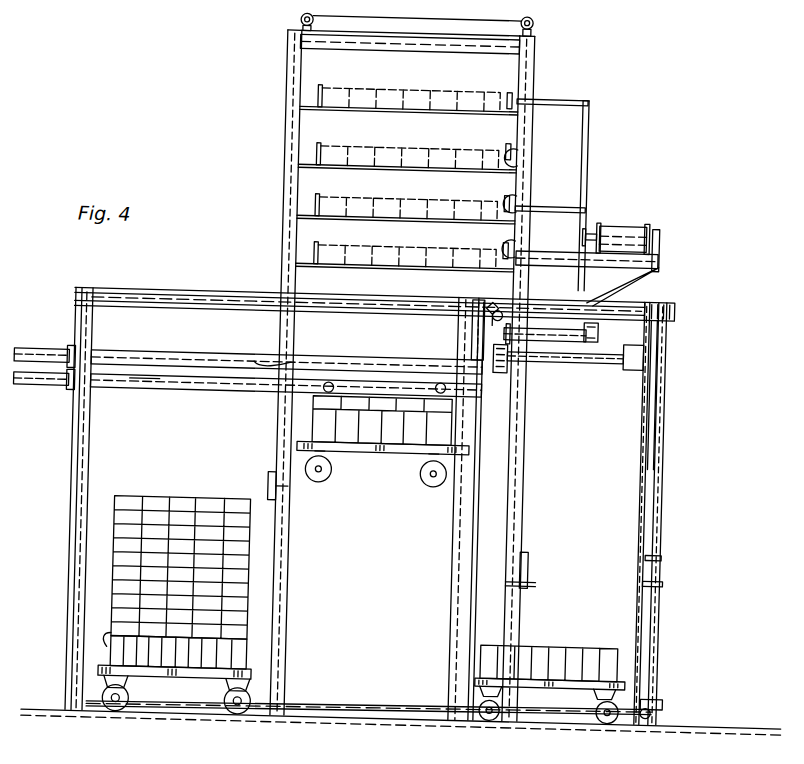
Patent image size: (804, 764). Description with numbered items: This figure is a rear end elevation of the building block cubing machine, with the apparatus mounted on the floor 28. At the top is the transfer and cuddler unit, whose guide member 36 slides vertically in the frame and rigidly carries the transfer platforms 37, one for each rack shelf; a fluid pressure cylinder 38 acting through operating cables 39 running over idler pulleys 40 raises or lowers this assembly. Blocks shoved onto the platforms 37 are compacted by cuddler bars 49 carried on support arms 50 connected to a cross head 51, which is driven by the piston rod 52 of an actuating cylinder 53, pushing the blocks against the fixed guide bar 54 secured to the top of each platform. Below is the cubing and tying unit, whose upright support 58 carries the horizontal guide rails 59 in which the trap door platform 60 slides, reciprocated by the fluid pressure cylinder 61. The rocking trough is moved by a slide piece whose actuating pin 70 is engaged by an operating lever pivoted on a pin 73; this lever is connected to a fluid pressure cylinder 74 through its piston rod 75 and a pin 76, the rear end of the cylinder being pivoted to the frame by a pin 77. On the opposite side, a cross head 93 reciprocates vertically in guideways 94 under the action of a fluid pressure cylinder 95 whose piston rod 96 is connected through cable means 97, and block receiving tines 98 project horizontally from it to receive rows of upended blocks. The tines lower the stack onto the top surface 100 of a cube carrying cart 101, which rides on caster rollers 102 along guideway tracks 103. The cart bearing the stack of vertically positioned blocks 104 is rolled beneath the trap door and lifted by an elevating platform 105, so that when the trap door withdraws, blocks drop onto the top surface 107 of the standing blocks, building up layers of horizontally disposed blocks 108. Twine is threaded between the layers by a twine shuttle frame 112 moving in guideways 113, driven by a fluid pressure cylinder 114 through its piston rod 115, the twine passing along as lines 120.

The floor 28 is at (41, 719).
The guide member 36 is at (527, 402).
The transfer platforms 37 is at (320, 105).
The fluid pressure cylinder 38 is at (541, 588).
The operating cables 39 is at (525, 17).
The idler pulleys 40 is at (291, 22).
The cuddler bars 49 is at (518, 124).
The support arms 50 is at (549, 96).
The cross head 51 is at (578, 96).
The piston rod 52 is at (592, 222).
The actuating cylinder 53 is at (641, 225).
The fixed guide bar 54 is at (281, 104).
The upright support 58 is at (74, 570).
The horizontal guide rails 59 is at (184, 364).
The trap door platform 60 is at (389, 369).
The fluid pressure cylinder 61 is at (41, 364).
The actuating pin 70 is at (456, 347).
The pin 73 is at (492, 303).
The fluid pressure cylinder 74 is at (568, 336).
The piston rod 75 is at (489, 331).
The pin 76 is at (476, 304).
The pin 77 is at (595, 333).
The cross head 93 is at (634, 364).
The guideways 94 is at (666, 372).
The fluid pressure cylinder 95 is at (656, 617).
The piston rod 96 is at (669, 564).
The cable means 97 is at (659, 476).
The block receiving tines 98 is at (603, 358).
The top surface 100 is at (472, 449).
The cube carrying carts 101 is at (193, 697).
The caster rollers 102 is at (234, 708).
The guideway tracks 103 is at (423, 690).
The stack of vertically positioned blocks 104 is at (458, 428).
The elevating platform 105 is at (375, 456).
The top surface 107 is at (544, 643).
The horizontally disposed blocks 108 is at (187, 503).
The twine shuttle frame 112 is at (249, 390).
The guideways 113 is at (201, 388).
The fluid pressure cylinder 114 is at (36, 390).
The piston rod 115 is at (149, 390).
The lines 120 is at (271, 503).